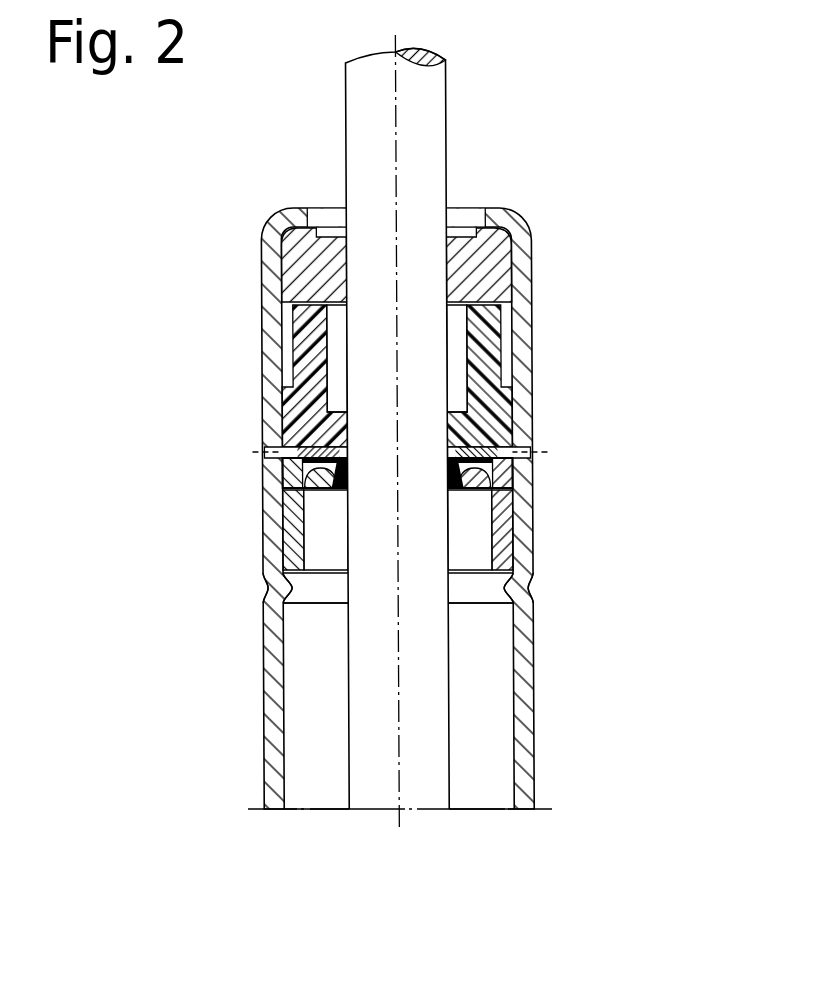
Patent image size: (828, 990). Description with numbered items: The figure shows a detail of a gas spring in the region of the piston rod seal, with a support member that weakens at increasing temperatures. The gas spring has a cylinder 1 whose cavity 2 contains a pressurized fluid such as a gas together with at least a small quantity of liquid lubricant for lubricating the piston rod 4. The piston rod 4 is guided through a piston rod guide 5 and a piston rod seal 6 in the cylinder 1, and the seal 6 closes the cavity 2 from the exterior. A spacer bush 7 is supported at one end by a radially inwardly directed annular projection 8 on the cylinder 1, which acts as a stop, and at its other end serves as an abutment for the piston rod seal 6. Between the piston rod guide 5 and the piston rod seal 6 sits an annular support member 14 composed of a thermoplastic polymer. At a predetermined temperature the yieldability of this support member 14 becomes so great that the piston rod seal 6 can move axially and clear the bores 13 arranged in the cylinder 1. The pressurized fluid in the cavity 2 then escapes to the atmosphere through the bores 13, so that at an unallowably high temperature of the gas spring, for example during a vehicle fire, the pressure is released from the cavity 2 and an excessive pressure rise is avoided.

The cylinder 1 is at (521, 658).
The cavity 2 is at (298, 655).
The piston rod 4 is at (420, 133).
The piston rod guide 5 is at (495, 270).
The piston rod seal 6 is at (512, 470).
The spacer bush 7 is at (503, 513).
The annular projection 8 is at (517, 588).
The bores 13 is at (283, 455).
The annular support member 14 is at (310, 343).